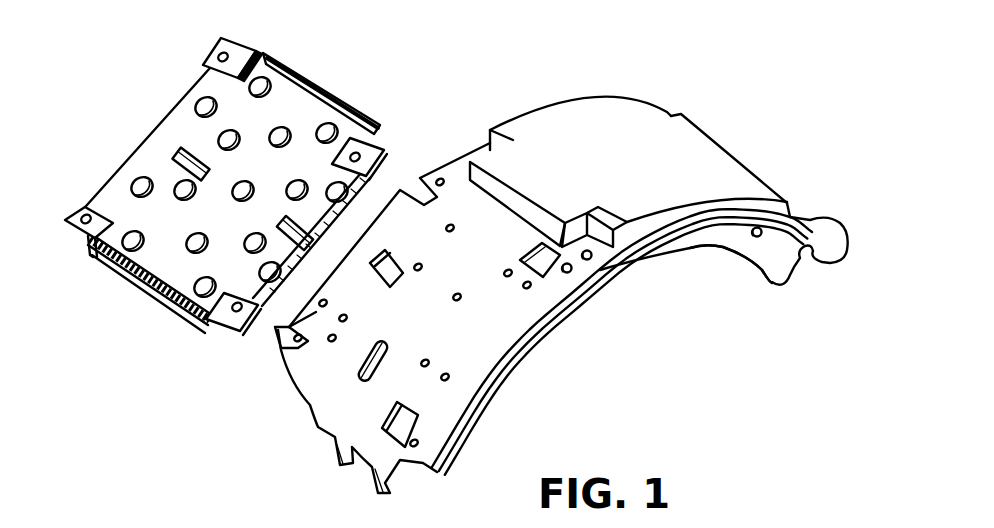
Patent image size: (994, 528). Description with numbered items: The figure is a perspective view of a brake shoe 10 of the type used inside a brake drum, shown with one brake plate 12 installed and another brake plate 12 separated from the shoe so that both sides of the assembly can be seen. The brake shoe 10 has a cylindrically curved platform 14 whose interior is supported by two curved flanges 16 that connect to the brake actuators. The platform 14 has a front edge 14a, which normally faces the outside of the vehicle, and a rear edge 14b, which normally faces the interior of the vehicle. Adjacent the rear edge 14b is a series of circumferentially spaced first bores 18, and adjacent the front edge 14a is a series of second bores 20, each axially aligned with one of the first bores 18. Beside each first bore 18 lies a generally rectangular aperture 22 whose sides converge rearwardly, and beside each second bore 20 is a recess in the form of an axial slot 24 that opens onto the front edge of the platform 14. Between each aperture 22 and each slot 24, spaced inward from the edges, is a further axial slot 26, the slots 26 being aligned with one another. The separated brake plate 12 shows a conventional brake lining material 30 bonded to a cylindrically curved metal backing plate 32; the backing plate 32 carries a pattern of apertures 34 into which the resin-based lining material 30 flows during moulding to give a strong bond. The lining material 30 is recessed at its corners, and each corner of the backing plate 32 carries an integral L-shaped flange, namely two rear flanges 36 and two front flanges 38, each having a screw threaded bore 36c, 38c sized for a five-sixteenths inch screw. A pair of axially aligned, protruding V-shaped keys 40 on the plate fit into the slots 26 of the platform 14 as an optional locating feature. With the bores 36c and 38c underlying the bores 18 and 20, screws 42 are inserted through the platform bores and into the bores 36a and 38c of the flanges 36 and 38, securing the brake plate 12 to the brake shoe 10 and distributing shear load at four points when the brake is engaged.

The brake shoe 10 is at (776, 292).
The brake plate 12 is at (709, 108).
The platform 14 is at (437, 478).
The front edge 14a is at (453, 153).
The rear edge 14b is at (488, 372).
The curved flange 16 is at (732, 247).
The first bore 18 is at (597, 277).
The second bore 20 is at (287, 340).
The aperture 22 is at (397, 420).
The axial slot 24 is at (291, 326).
The axial slot 26 is at (387, 268).
The brake lining material 30 is at (610, 98).
The backing plate 32 is at (318, 80).
The apertures 34 is at (165, 292).
The rear flange 36 is at (102, 195).
The bore of rear flange 36a is at (98, 256).
The screw threaded bore 36c is at (80, 208).
The front flange 38 is at (378, 148).
The screw threaded bore 38c is at (227, 313).
The protruding key 40 is at (308, 236).
The screw 42 is at (610, 257).